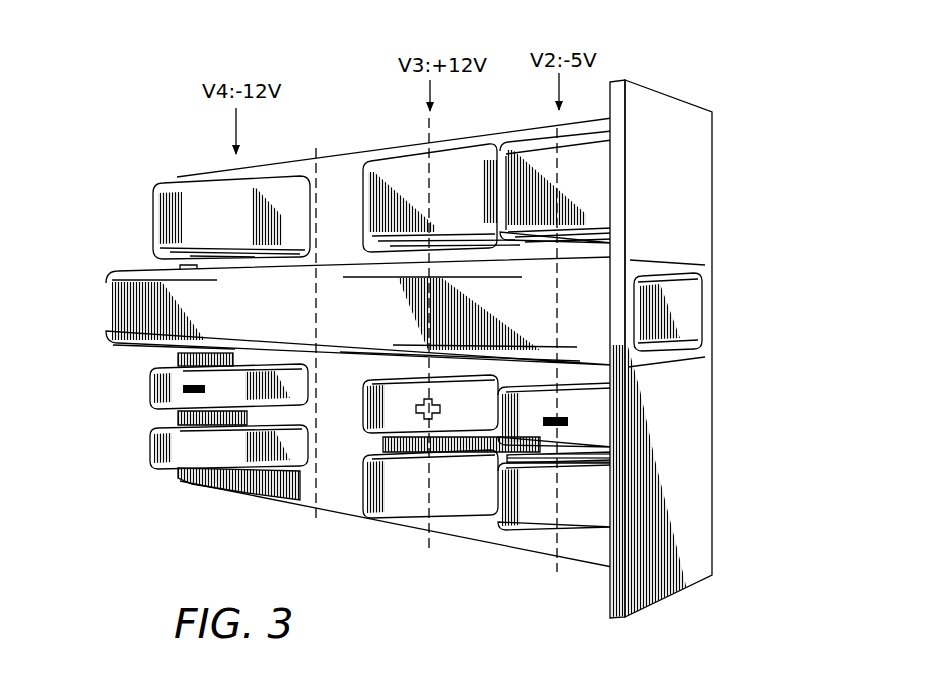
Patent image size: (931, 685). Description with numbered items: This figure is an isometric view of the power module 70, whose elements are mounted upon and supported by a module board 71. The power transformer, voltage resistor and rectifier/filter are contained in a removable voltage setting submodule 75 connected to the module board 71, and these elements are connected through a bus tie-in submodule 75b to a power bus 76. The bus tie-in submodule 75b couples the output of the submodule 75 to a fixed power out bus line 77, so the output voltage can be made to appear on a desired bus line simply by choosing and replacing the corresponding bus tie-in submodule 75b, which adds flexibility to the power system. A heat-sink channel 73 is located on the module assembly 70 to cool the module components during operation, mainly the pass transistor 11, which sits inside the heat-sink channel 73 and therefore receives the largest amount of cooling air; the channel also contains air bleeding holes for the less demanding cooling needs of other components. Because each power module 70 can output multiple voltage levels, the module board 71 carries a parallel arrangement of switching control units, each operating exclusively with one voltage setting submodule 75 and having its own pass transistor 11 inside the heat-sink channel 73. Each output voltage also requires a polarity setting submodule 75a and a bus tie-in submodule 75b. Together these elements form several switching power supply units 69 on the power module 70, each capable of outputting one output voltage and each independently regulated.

The power module 70 is at (651, 61).
The module board 71 is at (343, 162).
The removable submodule 75 is at (283, 192).
The pass transistor 11 is at (477, 292).
The power bus 76 is at (177, 266).
The heat-sink channel 73 is at (100, 322).
The polarity setting submodule 75a is at (160, 388).
The bus tie-in submodule 75b is at (290, 472).
The power out bus line 77 is at (176, 479).
The switching power supply units 69 is at (240, 492).